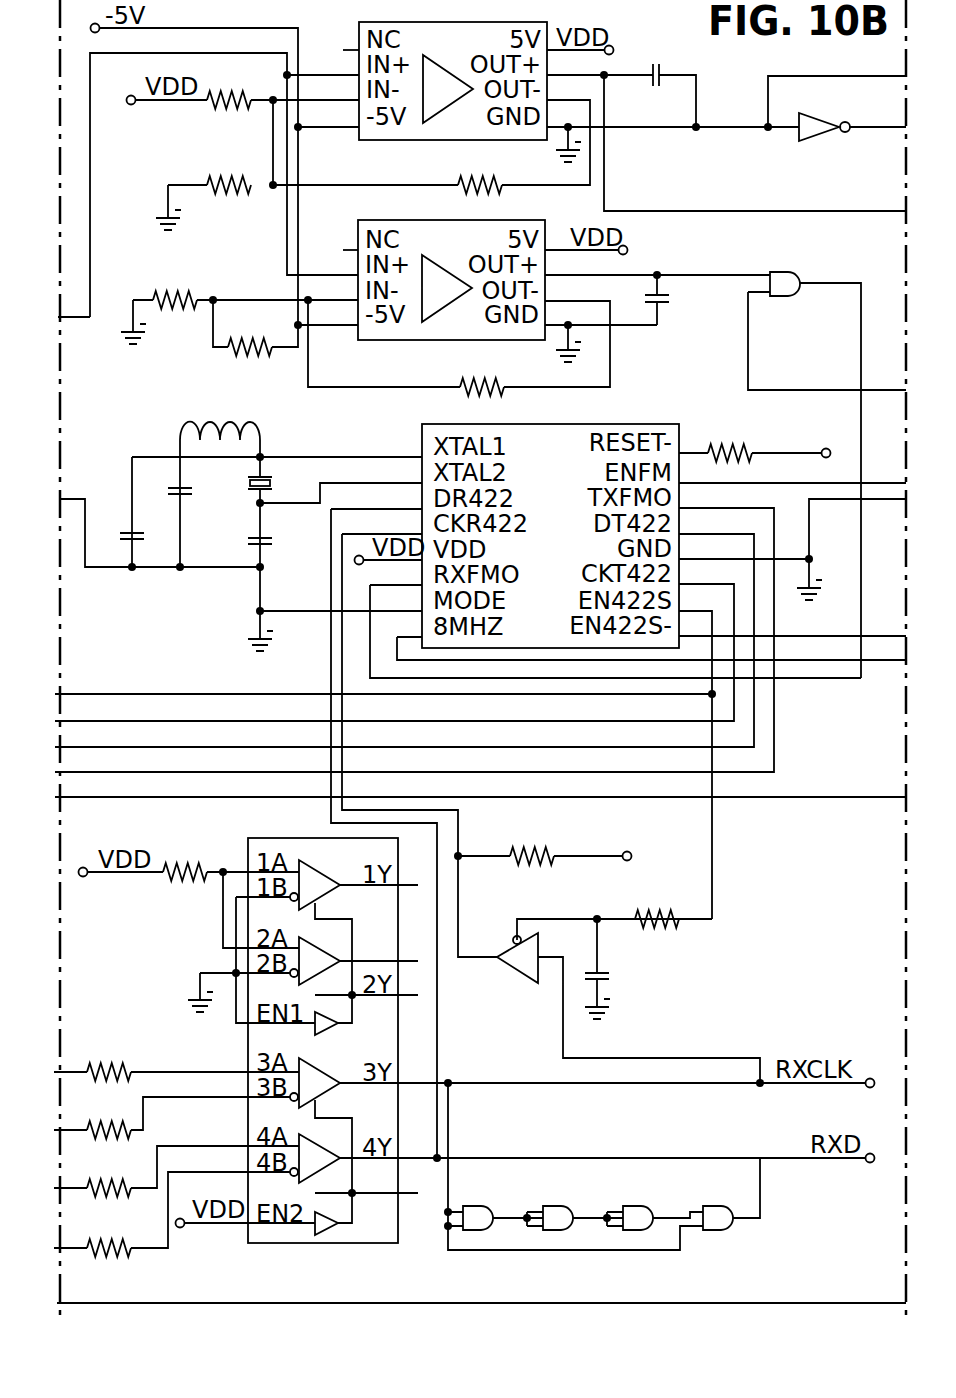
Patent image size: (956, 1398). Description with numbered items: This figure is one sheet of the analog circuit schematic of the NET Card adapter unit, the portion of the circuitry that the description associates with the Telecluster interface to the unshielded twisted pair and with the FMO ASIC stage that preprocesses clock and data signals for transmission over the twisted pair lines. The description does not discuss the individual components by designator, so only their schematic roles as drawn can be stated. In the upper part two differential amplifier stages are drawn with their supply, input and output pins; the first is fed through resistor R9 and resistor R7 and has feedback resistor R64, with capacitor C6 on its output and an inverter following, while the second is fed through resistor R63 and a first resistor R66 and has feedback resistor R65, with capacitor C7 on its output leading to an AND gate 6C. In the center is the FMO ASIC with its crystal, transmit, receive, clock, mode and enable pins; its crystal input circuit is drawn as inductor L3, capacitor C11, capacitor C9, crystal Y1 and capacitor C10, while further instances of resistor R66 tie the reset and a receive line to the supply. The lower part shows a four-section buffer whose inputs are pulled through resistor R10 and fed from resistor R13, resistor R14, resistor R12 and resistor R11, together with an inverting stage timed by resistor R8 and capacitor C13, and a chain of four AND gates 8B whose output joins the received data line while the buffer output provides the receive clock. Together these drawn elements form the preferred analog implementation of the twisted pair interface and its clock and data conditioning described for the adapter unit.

The resistor R9 is at (229, 83).
The resistor R7 is at (203, 187).
The resistor R64 is at (482, 168).
The capacitor C6 is at (669, 80).
The resistor R63 is at (214, 301).
The resistor R66 is at (522, 582).
The resistor R65 is at (483, 371).
The capacitor C7 is at (678, 300).
The AND gate 6C is at (827, 462).
The inductor L3 is at (220, 478).
The capacitor C11 is at (200, 479).
The capacitor C9 is at (144, 512).
The crystal Y1 is at (335, 482).
The capacitor C10 is at (280, 535).
The resistor R10 is at (185, 855).
The resistor R13 is at (176, 1057).
The resistor R14 is at (172, 1115).
The resistor R12 is at (176, 1171).
The resistor R11 is at (172, 1214).
The resistor R8 is at (673, 903).
The capacitor C13 is at (626, 969).
The AND gates 8B is at (602, 1164).